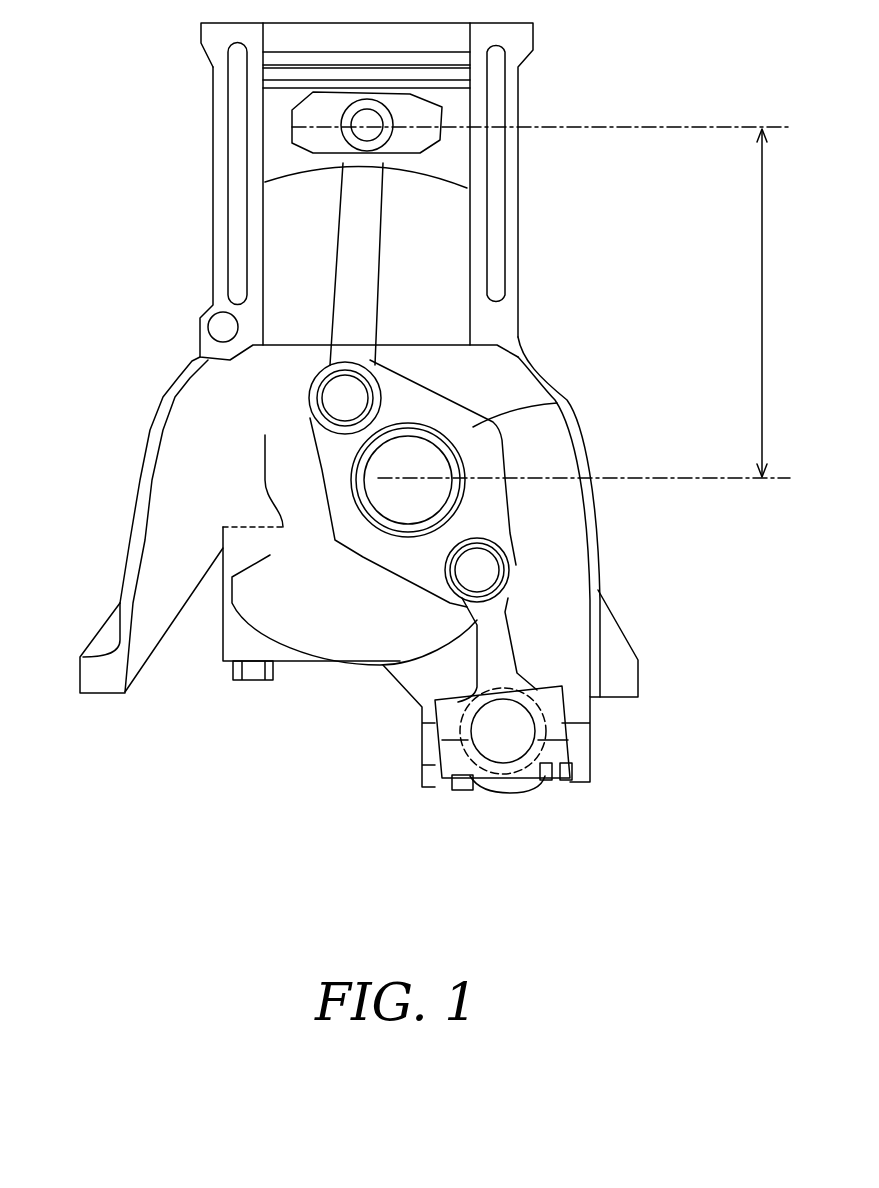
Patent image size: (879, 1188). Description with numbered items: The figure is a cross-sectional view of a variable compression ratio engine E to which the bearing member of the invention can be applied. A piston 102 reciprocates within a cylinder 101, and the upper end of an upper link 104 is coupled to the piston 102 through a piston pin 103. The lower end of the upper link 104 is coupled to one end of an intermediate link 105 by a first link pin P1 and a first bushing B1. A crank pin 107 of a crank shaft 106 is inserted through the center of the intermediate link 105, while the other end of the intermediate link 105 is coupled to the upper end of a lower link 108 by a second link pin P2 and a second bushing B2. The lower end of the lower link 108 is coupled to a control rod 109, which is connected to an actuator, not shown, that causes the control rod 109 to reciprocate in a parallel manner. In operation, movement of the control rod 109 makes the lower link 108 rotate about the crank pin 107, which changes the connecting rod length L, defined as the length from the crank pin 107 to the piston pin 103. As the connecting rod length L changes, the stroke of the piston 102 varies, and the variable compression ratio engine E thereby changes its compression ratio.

The cylinder 101 is at (425, 261).
The piston 102 is at (282, 150).
The piston pin 103 is at (367, 118).
The upper link 104 is at (365, 287).
The intermediate link 105 is at (473, 428).
The crank shaft 106 is at (282, 552).
The crank pin 107 is at (417, 500).
The lower link 108 is at (497, 660).
The control rod 109 is at (510, 733).
The first link pin P1 is at (305, 406).
The second link pin P2 is at (480, 575).
The first bushing B1 is at (345, 400).
The second bushing B2 is at (518, 559).
The variable compression ratio engine E is at (550, 155).
The connecting rod length L is at (547, 302).